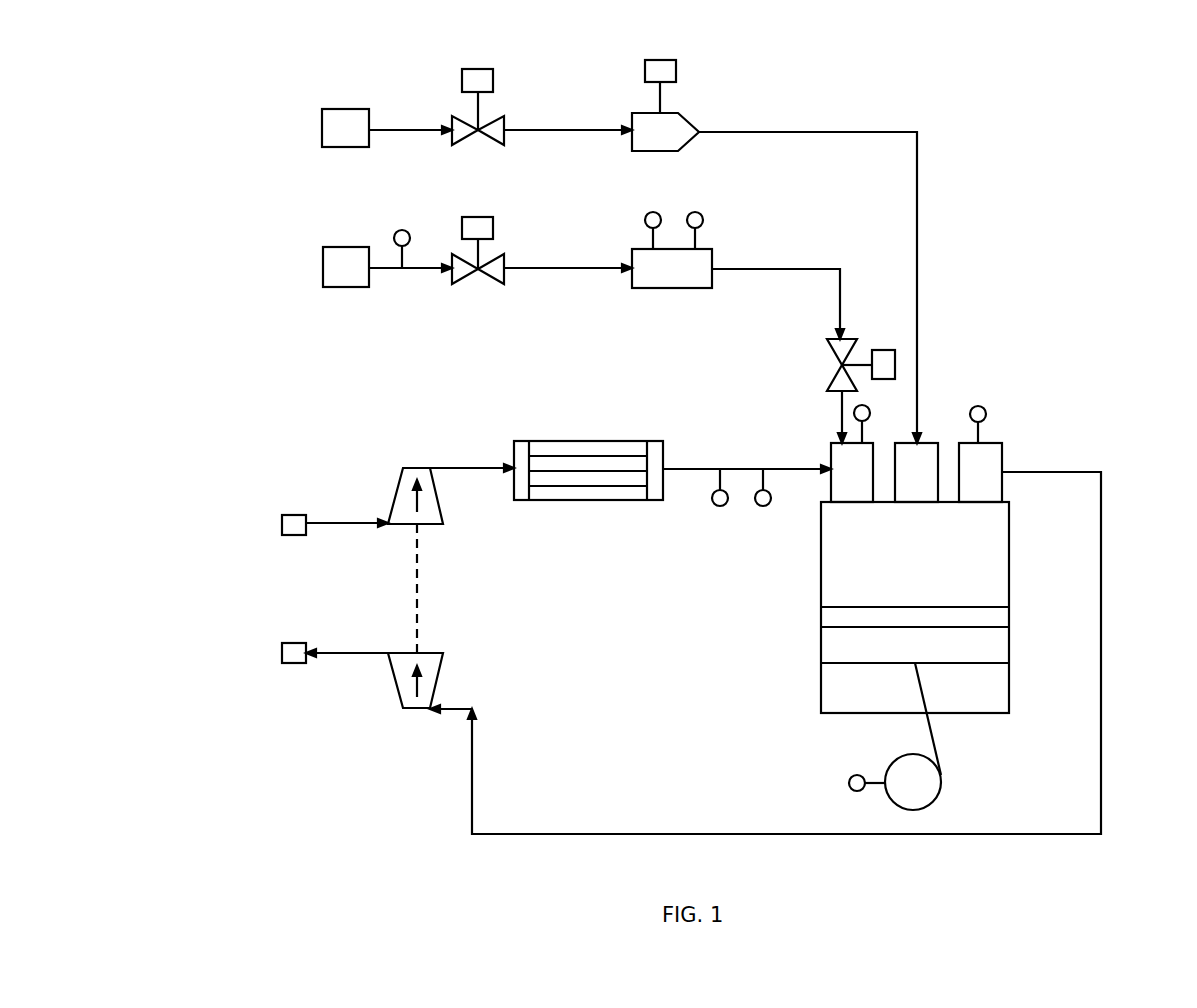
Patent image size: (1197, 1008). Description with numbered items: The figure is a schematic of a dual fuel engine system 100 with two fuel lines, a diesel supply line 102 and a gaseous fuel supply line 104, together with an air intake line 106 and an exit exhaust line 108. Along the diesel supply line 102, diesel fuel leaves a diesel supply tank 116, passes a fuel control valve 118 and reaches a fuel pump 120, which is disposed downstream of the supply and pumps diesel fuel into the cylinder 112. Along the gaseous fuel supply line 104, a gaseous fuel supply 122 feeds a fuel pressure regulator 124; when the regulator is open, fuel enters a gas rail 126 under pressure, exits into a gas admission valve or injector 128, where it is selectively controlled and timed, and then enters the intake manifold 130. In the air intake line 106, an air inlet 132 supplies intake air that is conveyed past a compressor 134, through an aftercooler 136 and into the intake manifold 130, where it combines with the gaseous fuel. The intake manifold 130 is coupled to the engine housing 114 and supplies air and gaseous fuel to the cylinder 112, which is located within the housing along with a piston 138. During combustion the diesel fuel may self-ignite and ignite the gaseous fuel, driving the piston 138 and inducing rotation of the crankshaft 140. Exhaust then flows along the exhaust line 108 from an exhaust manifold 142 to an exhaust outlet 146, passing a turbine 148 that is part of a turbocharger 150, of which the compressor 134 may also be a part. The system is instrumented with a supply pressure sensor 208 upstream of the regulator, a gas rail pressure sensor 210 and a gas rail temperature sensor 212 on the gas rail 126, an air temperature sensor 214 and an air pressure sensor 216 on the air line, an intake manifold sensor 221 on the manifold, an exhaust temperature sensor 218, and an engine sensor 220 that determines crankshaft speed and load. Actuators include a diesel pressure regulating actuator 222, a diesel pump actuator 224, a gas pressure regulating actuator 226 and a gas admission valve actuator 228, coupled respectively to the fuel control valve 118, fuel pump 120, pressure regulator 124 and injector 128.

The dual fuel engine system 100 is at (1086, 267).
The diesel supply line 102 is at (250, 56).
The gaseous fuel supply line 104 is at (249, 205).
The air intake line 106 is at (294, 436).
The exit exhaust line 108 is at (666, 794).
The cylinder 112 is at (823, 562).
The engine housing 114 is at (1011, 562).
The diesel supply tank 116 is at (345, 108).
The fuel control valve 118 is at (470, 126).
The fuel pump 120 is at (685, 115).
The gaseous fuel supply 122 is at (345, 247).
The fuel pressure regulator 124 is at (490, 284).
The gas rail 126 is at (680, 289).
The gas admission valve 128 is at (830, 381).
The intake manifold 130 is at (830, 458).
The air inlet 132 is at (295, 515).
The compressor 134 is at (412, 468).
The aftercooler 136 is at (563, 441).
The piston 138 is at (1003, 652).
The crankshaft 140 is at (941, 783).
The exhaust manifold 142 is at (1003, 453).
The exhaust outlet 146 is at (296, 639).
The turbine 148 is at (408, 709).
The turbocharger 150 is at (434, 575).
The supply pressure sensor 208 is at (402, 230).
The gas rail pressure sensor 210 is at (655, 212).
The gas rail temperature sensor 212 is at (700, 212).
The air temperature sensor 214 is at (720, 506).
The air pressure sensor 216 is at (763, 506).
The exhaust temperature sensor 218 is at (982, 404).
The engine sensor 220 is at (849, 782).
The intake manifold sensor 221 is at (853, 410).
The diesel pressure regulating actuator 222 is at (478, 69).
The diesel pump actuator 224 is at (660, 60).
The gas pressure regulating actuator 226 is at (478, 217).
The gas admission valve actuator 228 is at (886, 349).